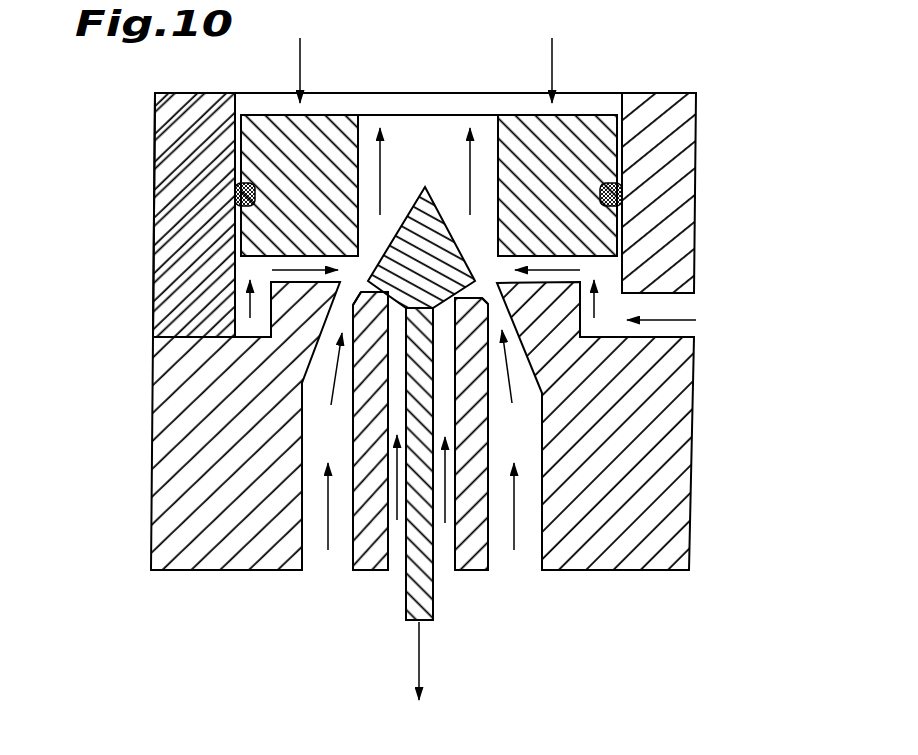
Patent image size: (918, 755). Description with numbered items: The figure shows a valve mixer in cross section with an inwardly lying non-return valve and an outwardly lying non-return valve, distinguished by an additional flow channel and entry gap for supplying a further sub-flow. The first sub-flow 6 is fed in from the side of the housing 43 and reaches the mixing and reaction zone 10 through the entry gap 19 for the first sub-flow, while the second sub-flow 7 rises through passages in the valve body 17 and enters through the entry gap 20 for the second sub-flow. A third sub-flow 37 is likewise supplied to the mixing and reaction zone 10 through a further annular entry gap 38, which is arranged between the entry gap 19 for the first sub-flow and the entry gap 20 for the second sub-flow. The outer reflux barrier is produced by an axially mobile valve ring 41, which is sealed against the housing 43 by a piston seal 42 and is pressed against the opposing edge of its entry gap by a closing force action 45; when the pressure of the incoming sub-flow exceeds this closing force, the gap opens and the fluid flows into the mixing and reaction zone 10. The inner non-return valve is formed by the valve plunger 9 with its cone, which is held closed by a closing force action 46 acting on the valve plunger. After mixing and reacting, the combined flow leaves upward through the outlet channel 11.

The first sub-flow 6 is at (696, 320).
The second sub-flow 7 is at (417, 521).
The valve plunger 9 is at (422, 379).
The mixing and reaction zone 10 is at (370, 252).
The outlet channel 11 is at (425, 171).
The valve body 17 is at (473, 449).
The entry gap for the first sub-flow 19 is at (503, 262).
The entry gap for the second sub-flow 20 is at (472, 300).
The third sub-flow 37 is at (419, 469).
The entry gap for third sub-flow 38 is at (342, 290).
The valve ring 41 is at (429, 185).
The piston seal 42 is at (235, 193).
The housing 43 is at (638, 482).
The closing force action on valve ring 45 is at (426, 53).
The closing force action on valve plunger 46 is at (438, 664).